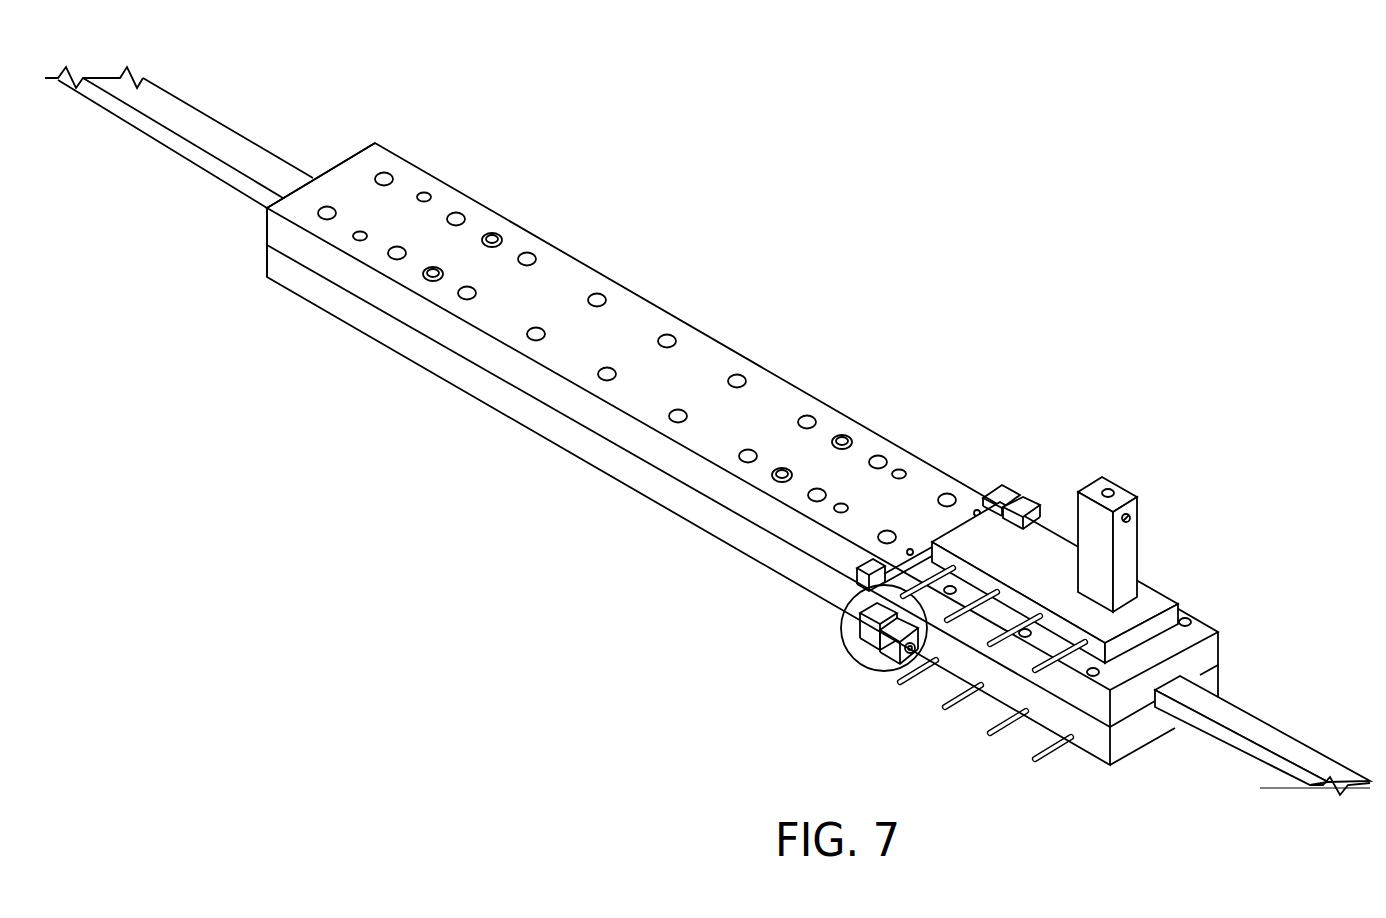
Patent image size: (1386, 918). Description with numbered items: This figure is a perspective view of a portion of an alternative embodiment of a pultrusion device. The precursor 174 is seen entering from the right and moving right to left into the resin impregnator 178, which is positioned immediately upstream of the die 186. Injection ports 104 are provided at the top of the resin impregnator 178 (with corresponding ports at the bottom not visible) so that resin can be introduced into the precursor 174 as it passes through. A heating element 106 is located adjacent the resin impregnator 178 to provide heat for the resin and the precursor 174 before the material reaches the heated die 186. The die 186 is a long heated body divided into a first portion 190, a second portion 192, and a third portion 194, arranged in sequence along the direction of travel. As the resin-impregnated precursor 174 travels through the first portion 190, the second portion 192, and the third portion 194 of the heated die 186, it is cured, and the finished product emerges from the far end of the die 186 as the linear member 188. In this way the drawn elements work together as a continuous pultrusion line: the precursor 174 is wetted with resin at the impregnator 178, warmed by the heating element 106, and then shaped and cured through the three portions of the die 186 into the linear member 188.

The injection ports 104 is at (1113, 488).
The heating element 106 is at (1053, 532).
The precursor 174 is at (1283, 743).
The resin impregnator 178 is at (973, 683).
The die 186 is at (553, 432).
The linear member 188 is at (243, 136).
The first portion 190 is at (903, 498).
The second portion 192 is at (697, 340).
The third portion 194 is at (337, 175).